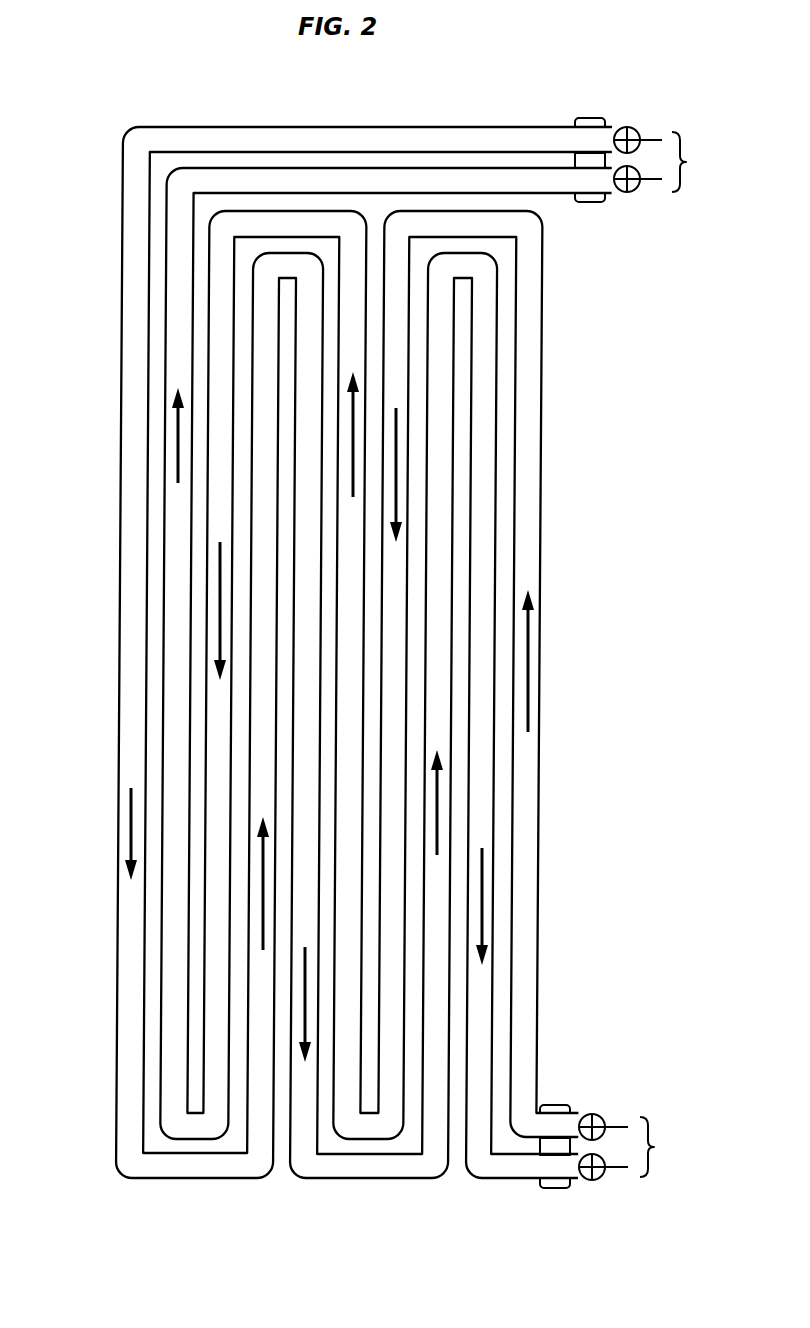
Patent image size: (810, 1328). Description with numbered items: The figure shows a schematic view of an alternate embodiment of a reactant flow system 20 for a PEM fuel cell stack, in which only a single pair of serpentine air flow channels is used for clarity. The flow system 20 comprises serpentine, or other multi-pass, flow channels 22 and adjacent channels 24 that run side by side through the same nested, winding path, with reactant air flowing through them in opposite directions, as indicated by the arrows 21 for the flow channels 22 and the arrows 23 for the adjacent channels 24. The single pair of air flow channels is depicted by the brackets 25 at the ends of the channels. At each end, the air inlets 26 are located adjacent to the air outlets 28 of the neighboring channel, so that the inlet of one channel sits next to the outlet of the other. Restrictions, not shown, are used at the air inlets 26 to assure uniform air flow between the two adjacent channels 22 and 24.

The reactant flow system 20 is at (385, 672).
The arrows 21 is at (350, 450).
The flow channels 22 is at (432, 220).
The arrows 23 is at (131, 832).
The adjacent channels 24 is at (453, 260).
The brackets 25 is at (631, 653).
The air inlets 26 is at (632, 132).
The air outlets 28 is at (632, 187).